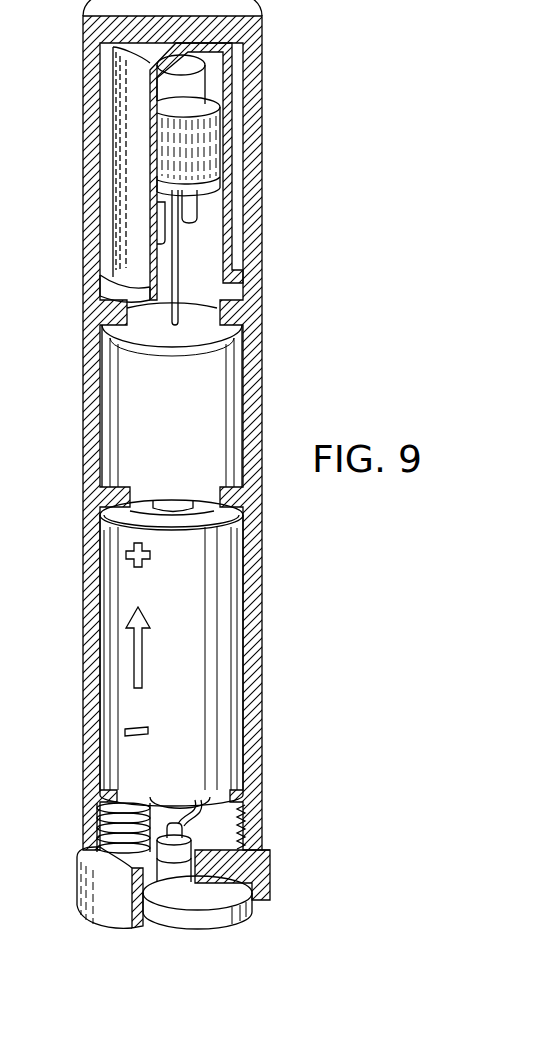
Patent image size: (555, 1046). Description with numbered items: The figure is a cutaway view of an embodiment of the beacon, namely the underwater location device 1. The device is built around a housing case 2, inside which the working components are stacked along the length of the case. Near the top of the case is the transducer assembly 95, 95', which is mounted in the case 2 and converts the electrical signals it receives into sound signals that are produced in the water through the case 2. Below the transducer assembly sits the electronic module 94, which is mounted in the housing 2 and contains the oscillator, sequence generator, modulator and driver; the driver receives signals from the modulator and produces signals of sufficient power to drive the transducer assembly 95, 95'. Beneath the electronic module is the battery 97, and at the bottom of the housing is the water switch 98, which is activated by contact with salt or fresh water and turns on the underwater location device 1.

The underwater location device 1 is at (66, 726).
The housing case 2 is at (83, 620).
The electronic module 94 is at (225, 424).
The transducer assembly 95 is at (228, 190).
The transducer assembly 95' is at (90, 174).
The battery 97 is at (241, 600).
The water switch 98 is at (220, 912).